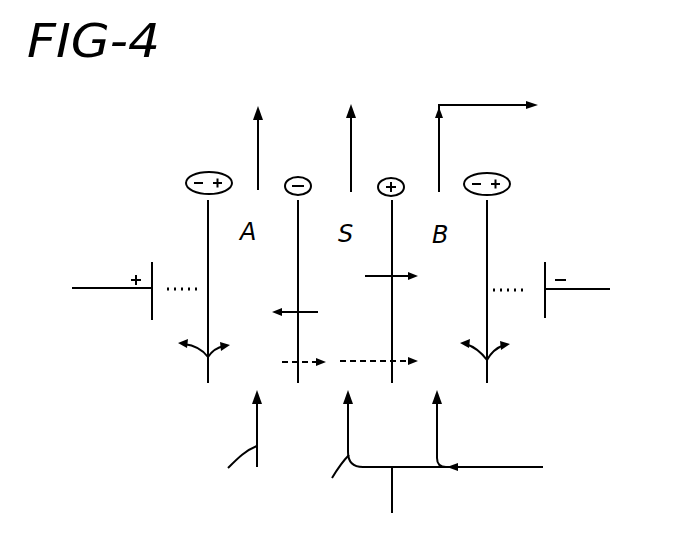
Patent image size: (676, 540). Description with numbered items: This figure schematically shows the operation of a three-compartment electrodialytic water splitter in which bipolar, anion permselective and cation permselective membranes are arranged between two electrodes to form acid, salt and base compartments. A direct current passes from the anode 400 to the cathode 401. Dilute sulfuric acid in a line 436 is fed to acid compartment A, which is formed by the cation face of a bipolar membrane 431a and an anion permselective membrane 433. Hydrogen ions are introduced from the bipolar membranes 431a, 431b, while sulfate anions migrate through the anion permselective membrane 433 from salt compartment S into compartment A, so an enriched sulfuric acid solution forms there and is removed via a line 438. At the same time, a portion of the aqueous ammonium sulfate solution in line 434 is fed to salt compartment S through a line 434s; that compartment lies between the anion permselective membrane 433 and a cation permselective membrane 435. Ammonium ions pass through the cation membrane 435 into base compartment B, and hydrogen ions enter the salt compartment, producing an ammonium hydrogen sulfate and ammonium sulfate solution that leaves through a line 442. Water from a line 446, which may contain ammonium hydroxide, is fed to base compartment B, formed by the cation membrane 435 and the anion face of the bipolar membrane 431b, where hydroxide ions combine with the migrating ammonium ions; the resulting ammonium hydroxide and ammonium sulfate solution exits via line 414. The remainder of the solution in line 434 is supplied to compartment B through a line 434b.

The anode 400 is at (152, 307).
The cathode 401 is at (545, 313).
The bipolar membrane 431a is at (208, 373).
The bipolar membrane 431b is at (487, 378).
The anion permselective membrane 433 is at (298, 373).
The cation permselective membrane 435 is at (392, 373).
The line 436 is at (257, 447).
The line 438 is at (258, 145).
The line 442 is at (351, 148).
The line 414 is at (439, 137).
The line 434 is at (392, 498).
The line 434s is at (348, 448).
The line 434b is at (437, 425).
The line 446 is at (500, 471).